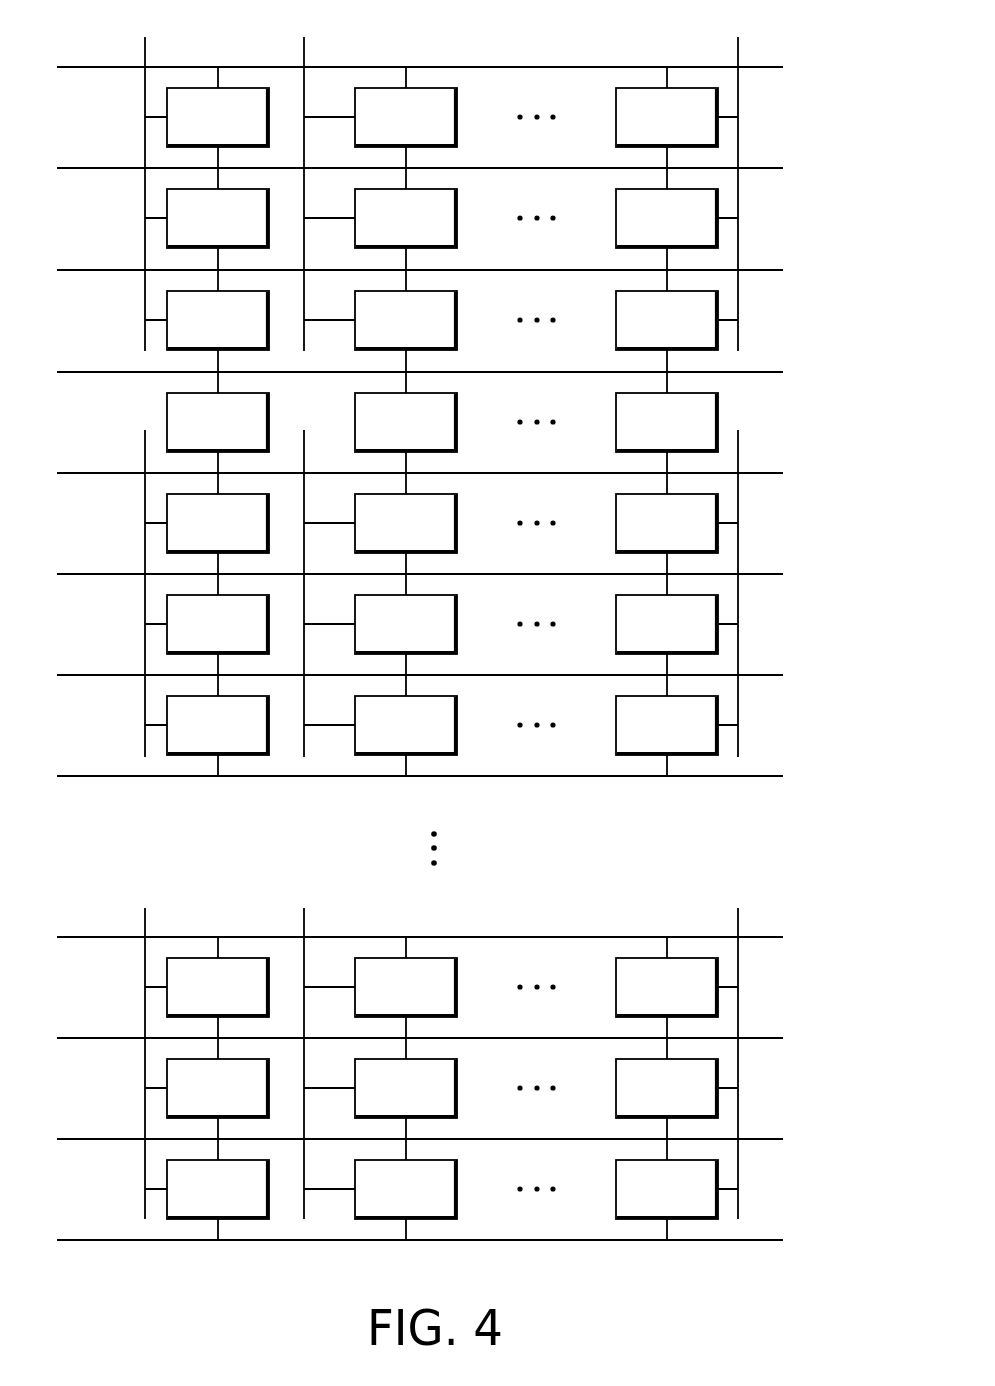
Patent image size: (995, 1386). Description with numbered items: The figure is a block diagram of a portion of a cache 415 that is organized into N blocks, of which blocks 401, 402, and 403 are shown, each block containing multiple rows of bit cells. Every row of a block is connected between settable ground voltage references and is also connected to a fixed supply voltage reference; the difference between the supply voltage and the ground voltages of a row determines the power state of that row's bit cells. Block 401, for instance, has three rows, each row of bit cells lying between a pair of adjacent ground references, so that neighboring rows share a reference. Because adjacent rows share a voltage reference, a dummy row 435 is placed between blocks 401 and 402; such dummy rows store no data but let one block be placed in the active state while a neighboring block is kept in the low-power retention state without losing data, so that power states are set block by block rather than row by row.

The block 401 is at (795, 67).
The block 402 is at (795, 473).
The block 403 is at (795, 937).
The dummy row 435 is at (782, 421).
The cache 415 is at (627, 1313).